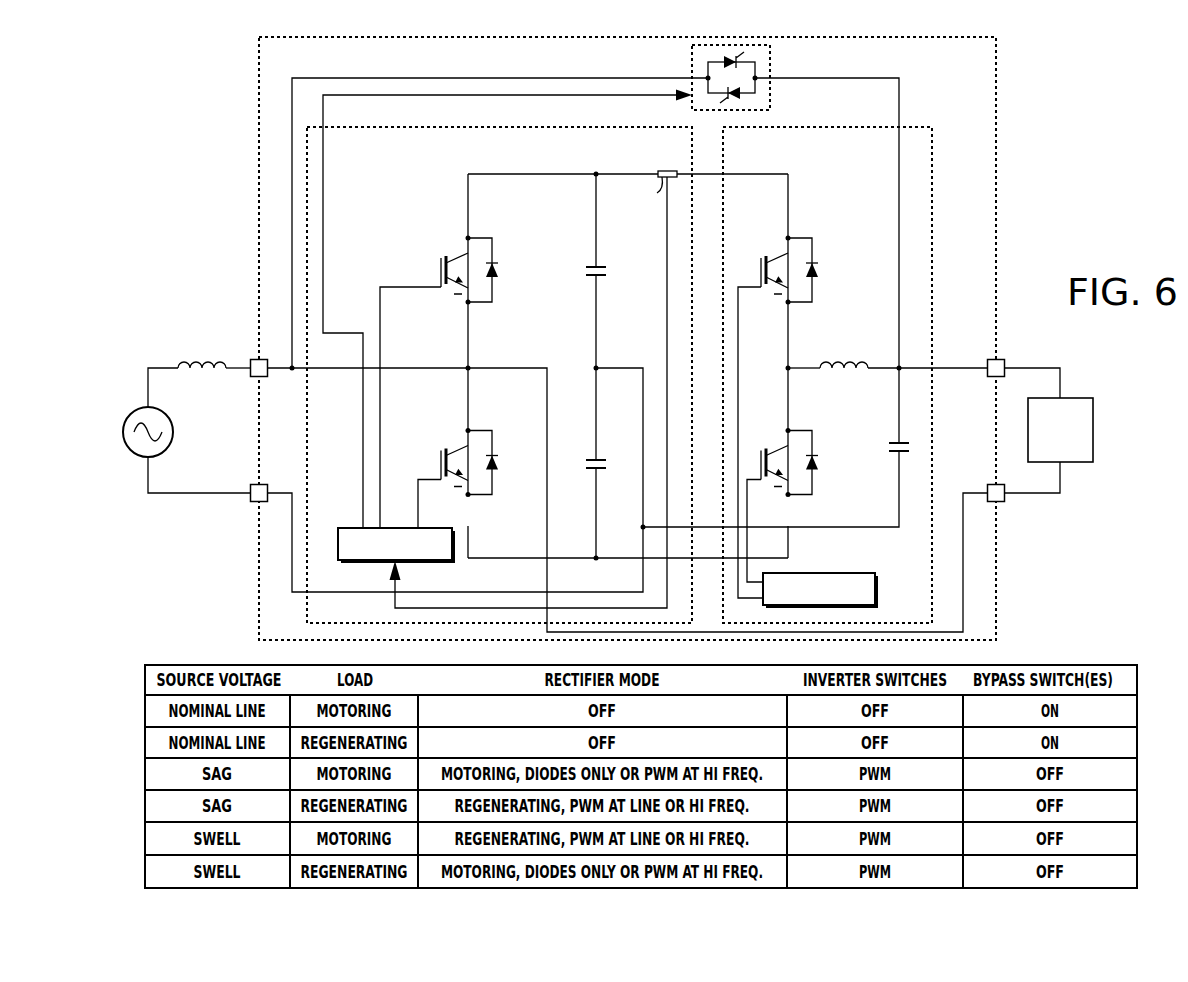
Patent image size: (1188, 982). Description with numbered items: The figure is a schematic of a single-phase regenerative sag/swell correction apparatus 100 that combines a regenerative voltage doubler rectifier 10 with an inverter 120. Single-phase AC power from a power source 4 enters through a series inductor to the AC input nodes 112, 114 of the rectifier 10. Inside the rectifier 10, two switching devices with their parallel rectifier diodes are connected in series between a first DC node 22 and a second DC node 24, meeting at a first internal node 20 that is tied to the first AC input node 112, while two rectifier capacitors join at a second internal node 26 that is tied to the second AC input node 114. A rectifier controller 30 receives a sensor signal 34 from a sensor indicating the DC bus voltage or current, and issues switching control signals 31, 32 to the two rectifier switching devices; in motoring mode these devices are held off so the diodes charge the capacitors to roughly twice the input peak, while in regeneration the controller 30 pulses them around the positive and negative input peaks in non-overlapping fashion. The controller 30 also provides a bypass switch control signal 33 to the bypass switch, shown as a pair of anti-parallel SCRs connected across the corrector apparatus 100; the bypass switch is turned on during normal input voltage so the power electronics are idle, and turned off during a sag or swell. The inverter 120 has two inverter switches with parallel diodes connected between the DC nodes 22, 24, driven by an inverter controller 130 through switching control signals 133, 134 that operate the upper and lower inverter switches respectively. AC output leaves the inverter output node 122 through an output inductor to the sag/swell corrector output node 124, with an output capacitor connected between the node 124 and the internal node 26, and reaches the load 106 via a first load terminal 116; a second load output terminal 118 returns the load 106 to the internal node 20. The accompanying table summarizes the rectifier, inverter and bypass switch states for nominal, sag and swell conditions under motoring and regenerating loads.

The single-phase power source 4 is at (136, 408).
The regenerative voltage doubler rectifier 10 is at (499, 123).
The first internal node 20 is at (468, 352).
The first DC node 22 is at (470, 190).
The second DC node 24 is at (470, 545).
The second internal node 26 is at (596, 352).
The rectifier controller 30 is at (358, 528).
The first switching control signal 31 is at (381, 432).
The second rectifier switching control signal 32 is at (418, 495).
The bypass switch control signal 33 is at (363, 465).
The sensor signal 34 is at (667, 238).
The regenerative sag/swell correction apparatus 100 is at (258, 60).
The load 106 is at (1078, 397).
The first AC input node 112 is at (253, 359).
The second AC input node 114 is at (252, 485).
The first load terminal 116 is at (1005, 360).
The second load output terminal 118 is at (1000, 503).
The inverter 120 is at (828, 125).
The inverter output node 122 is at (787, 360).
The sag/swell corrector output node 124 is at (884, 362).
The inverter controller 130 is at (877, 590).
The inverter switching control signal 133 is at (740, 313).
The inverter switching control signal 134 is at (747, 506).